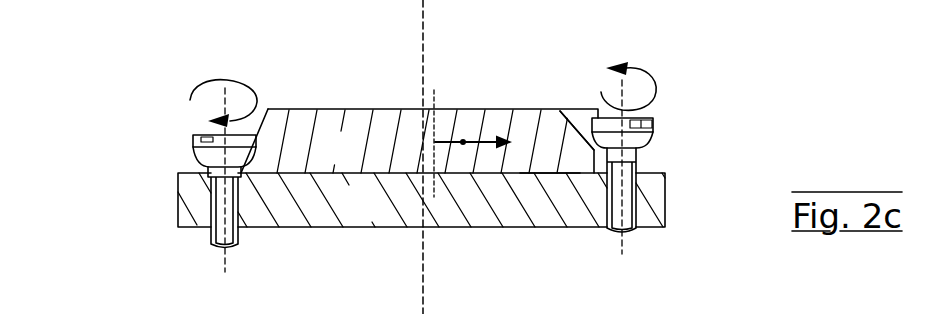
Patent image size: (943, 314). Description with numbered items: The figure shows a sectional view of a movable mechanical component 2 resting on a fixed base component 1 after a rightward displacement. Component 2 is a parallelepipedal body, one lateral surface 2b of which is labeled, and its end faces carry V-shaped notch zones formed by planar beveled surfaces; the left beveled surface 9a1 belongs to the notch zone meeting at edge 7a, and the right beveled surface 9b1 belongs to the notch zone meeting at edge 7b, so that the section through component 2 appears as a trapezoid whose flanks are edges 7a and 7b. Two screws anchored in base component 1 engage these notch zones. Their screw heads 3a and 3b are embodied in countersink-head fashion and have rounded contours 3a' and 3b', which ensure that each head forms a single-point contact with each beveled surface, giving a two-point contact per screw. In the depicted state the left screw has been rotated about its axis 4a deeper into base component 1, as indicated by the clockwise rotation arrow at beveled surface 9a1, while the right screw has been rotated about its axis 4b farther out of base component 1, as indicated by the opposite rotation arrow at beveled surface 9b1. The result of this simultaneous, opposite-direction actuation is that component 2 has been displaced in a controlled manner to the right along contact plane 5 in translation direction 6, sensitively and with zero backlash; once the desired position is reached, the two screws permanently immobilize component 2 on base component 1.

The fixed base component 1 is at (373, 220).
The mechanical component 2 is at (533, 125).
The lateral surface 2b is at (357, 163).
The screw head 3a is at (168, 128).
The rounded contour 3a' is at (151, 183).
The screw head 3b is at (680, 105).
The rounded contour 3b' is at (688, 150).
The axis 4a is at (223, 260).
The axis 4b is at (623, 240).
The contact plane 5 is at (550, 172).
The translation direction 6 is at (463, 142).
The edge 7a is at (287, 133).
The edge 7b is at (573, 128).
The beveled surface 9a1 is at (267, 109).
The beveled surface 9b1 is at (599, 109).